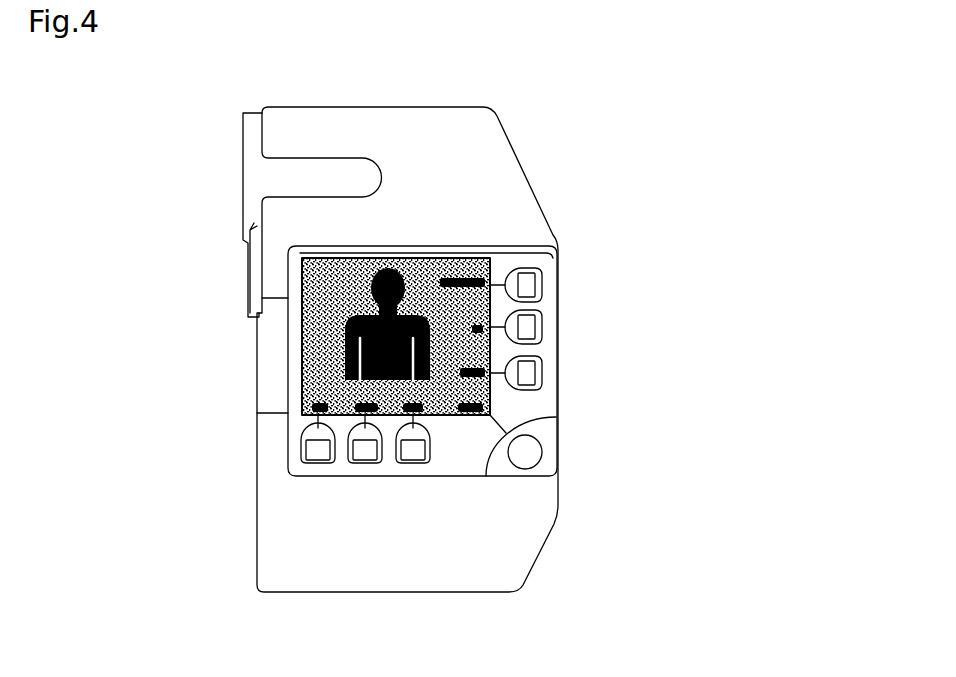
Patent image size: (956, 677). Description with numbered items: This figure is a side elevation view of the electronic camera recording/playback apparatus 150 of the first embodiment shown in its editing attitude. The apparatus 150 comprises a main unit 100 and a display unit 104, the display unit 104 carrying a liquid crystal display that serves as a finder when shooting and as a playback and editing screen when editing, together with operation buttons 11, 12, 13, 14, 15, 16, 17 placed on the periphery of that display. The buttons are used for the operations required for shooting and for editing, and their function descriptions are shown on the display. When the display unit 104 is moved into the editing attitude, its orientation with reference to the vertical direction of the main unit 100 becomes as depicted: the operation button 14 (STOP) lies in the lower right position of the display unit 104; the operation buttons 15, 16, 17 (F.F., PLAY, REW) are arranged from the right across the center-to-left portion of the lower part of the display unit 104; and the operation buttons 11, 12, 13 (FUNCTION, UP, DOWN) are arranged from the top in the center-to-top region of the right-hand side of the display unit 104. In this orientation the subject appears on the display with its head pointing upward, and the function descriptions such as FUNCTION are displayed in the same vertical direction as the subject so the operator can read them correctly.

The electronic camera recording/playback apparatus 150 is at (533, 123).
The main unit 100 is at (530, 185).
The display unit 104 is at (547, 307).
The operation button 11 is at (533, 283).
The operation button 12 is at (533, 328).
The operation button 13 is at (533, 373).
The operation button 14 is at (525, 452).
The operation button 15 is at (412, 463).
The operation button 16 is at (362, 463).
The operation button 17 is at (310, 463).